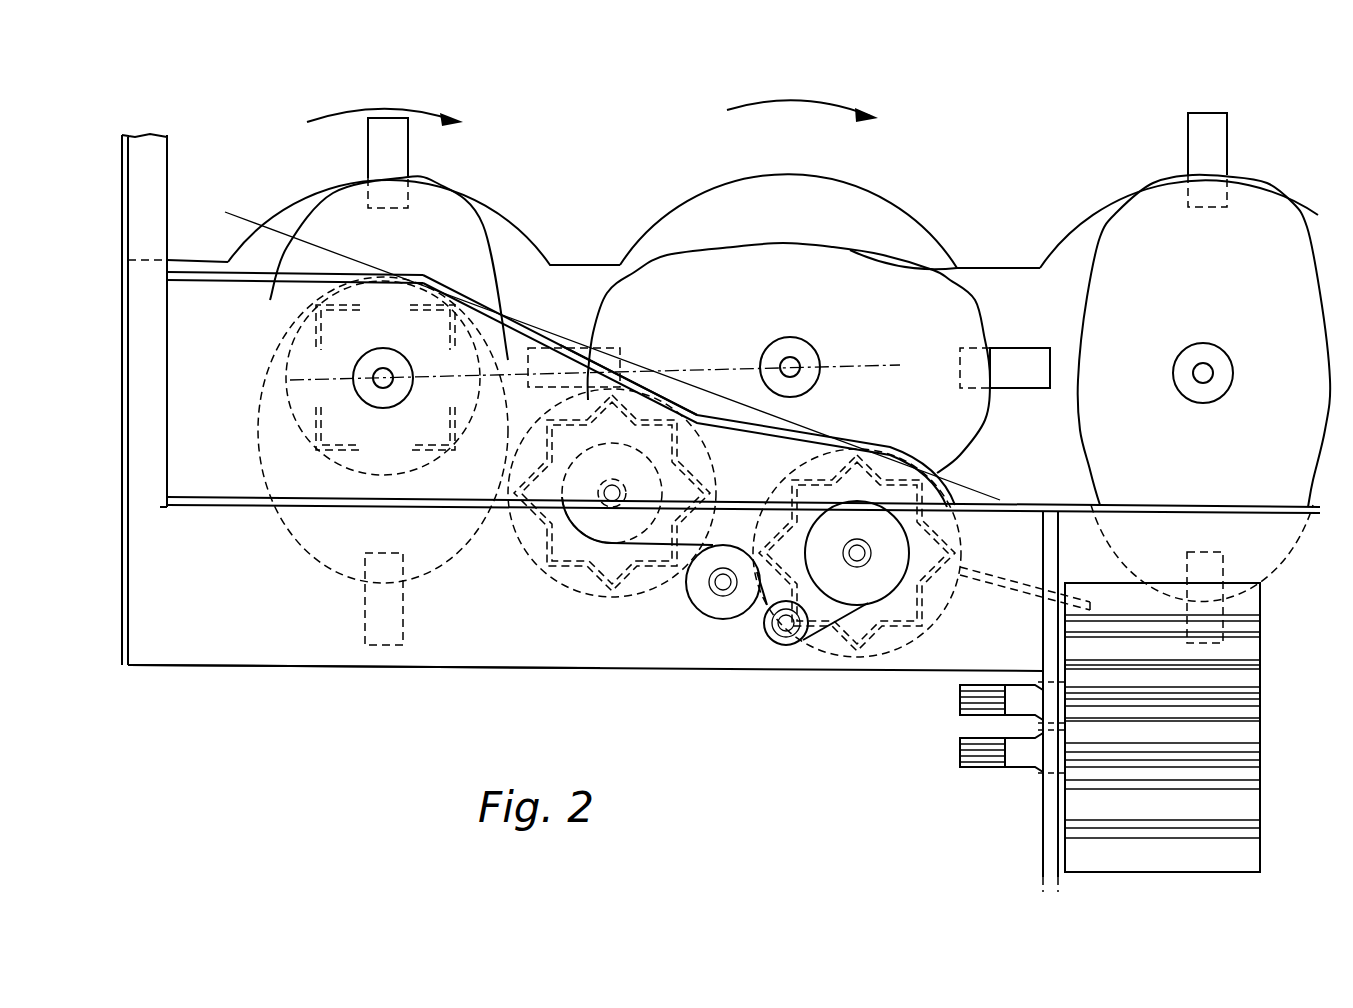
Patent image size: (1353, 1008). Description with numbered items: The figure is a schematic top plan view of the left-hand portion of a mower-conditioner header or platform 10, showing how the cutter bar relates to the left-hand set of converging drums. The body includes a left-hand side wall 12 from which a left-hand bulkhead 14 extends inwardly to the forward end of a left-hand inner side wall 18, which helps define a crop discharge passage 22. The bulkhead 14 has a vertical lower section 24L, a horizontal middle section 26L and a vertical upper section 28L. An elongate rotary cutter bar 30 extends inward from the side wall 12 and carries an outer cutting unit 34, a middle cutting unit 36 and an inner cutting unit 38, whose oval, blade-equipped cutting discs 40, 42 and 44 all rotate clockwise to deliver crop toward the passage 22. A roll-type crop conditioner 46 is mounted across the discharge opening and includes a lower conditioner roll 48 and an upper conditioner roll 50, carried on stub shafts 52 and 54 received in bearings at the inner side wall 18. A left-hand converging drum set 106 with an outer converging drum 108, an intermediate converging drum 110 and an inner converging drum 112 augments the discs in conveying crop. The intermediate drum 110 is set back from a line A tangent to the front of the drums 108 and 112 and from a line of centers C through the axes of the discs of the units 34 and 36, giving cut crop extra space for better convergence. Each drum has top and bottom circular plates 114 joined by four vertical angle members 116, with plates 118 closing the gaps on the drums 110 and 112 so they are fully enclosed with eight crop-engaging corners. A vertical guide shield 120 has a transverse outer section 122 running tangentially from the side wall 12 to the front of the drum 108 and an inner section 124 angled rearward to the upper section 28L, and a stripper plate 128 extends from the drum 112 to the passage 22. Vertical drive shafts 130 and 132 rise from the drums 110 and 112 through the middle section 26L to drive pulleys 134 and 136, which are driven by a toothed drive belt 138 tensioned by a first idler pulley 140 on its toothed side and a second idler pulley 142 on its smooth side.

The mower-conditioner header or platform 10 is at (952, 143).
The left-hand side wall 12 is at (122, 140).
The left-hand bulkhead 14 is at (398, 678).
The left-hand inner side wall 18 is at (1040, 832).
The crop discharge passage 22 is at (1108, 900).
The vertical lower section of bulkhead 24L is at (292, 670).
The horizontal middle section of bulkhead 26L is at (262, 603).
The vertical upper section of bulkhead 28L is at (218, 508).
The rotary cutter bar 30 is at (602, 250).
The outer cutting unit 34 is at (300, 192).
The middle cutting unit 36 is at (916, 245).
The inner cutting unit 38 is at (1138, 182).
The cutting disc 40 is at (463, 187).
The cutting disc 42 is at (727, 247).
The cutting disc 44 is at (1088, 283).
The roll-type crop conditioner 46 is at (1228, 883).
The lower conditioner roll 48 is at (1255, 852).
The upper conditioner roll 50 is at (1250, 650).
The stub shaft of lower conditioner roll 52 is at (975, 770).
The stub shaft of upper conditioner roll 54 is at (958, 684).
The left-hand converging drum set 106 is at (650, 390).
The outer converging drum 108 is at (292, 328).
The intermediate converging drum 110 is at (505, 548).
The inner converging drum 112 is at (975, 546).
The circular plates 114 is at (287, 396).
The vertical angle members 116 is at (305, 428).
The plates 118 is at (585, 575).
The guide shield 120 is at (536, 322).
The transverse outer section 122 is at (204, 270).
The inner section 124 is at (698, 374).
The stripper plate 128 is at (1063, 560).
The vertical drive shaft 130 is at (520, 470).
The vertical drive shaft 132 is at (870, 556).
The drive pulley 134 is at (618, 565).
The drive pulley 136 is at (814, 648).
The toothed drive belt 138 is at (862, 625).
The first idler pulley 140 is at (786, 647).
The second idler pulley 142 is at (724, 621).
The line A is at (230, 208).
The line of centers C is at (880, 365).